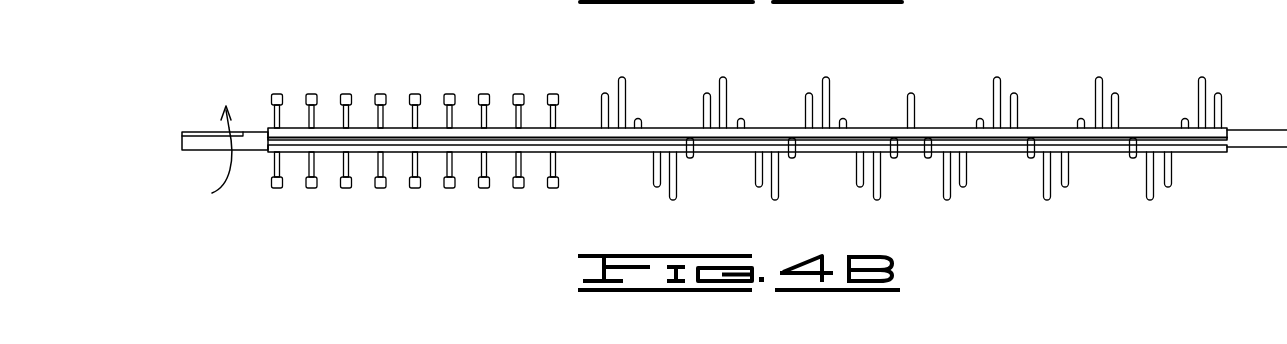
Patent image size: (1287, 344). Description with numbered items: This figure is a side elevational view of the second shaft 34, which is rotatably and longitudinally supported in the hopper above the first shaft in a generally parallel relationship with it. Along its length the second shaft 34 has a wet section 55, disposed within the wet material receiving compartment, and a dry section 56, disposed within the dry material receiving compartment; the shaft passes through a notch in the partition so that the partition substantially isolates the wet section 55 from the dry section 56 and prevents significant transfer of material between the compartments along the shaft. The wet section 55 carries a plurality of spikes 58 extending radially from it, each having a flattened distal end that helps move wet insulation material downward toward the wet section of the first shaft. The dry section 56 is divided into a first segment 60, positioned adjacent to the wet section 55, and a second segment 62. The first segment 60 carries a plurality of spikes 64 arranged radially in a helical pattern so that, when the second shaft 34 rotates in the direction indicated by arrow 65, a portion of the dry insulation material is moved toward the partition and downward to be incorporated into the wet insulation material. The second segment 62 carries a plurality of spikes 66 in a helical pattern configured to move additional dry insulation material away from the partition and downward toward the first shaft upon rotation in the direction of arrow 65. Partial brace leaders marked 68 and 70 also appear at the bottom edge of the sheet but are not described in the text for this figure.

The second shaft 34 is at (253, 131).
The wet section 55 is at (267, 77).
The dry section 56 is at (911, 74).
The spikes 58 is at (372, 172).
The first segment 60 is at (750, 190).
The second segment 62 is at (913, 192).
The spikes 64 is at (653, 176).
The arrow 65 is at (230, 207).
The spikes 66 is at (1198, 96).
The pin group (FIG. 4C) 68 is at (415, 343).
The pin group (FIG. 4C) 70 is at (910, 342).